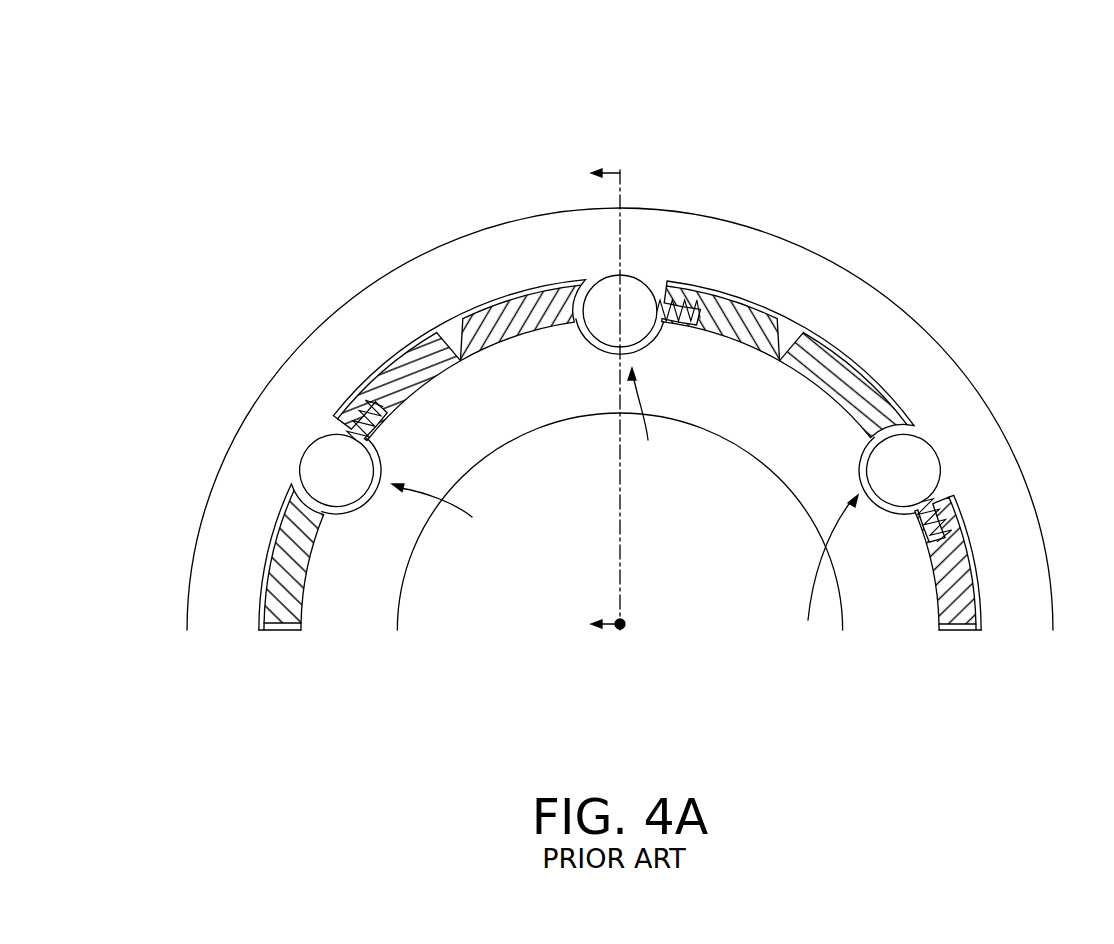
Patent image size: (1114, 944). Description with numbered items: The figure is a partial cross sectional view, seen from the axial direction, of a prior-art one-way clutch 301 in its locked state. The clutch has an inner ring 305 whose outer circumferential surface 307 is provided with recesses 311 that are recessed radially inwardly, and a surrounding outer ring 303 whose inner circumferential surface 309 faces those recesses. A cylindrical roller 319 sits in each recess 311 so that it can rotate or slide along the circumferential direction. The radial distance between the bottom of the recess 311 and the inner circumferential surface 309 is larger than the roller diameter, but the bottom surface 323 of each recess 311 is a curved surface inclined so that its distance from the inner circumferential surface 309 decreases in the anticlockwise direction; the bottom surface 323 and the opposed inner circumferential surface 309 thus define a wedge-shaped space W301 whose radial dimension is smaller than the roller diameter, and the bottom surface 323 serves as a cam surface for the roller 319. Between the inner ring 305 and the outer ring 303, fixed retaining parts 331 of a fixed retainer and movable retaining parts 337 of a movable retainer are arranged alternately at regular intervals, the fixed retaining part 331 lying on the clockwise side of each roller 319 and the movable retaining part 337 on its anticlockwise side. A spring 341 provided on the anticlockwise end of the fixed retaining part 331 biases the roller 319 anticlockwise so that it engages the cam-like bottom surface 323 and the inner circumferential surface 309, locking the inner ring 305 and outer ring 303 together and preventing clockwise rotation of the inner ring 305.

The one-way clutch 301 is at (880, 140).
The outer ring 303 is at (227, 578).
The inner ring 305 is at (798, 473).
The outer circumferential surface 307 is at (308, 634).
The inner circumferential surface of the outer ring 309 is at (965, 633).
The recess 311 is at (625, 510).
The cylindrical roller 319 is at (598, 275).
The bottom surface 323 is at (372, 500).
The fixed retaining part 331 is at (736, 303).
The movable retaining part 337 is at (484, 318).
The spring 341 is at (660, 292).
The wedge-shaped space W301 is at (603, 287).